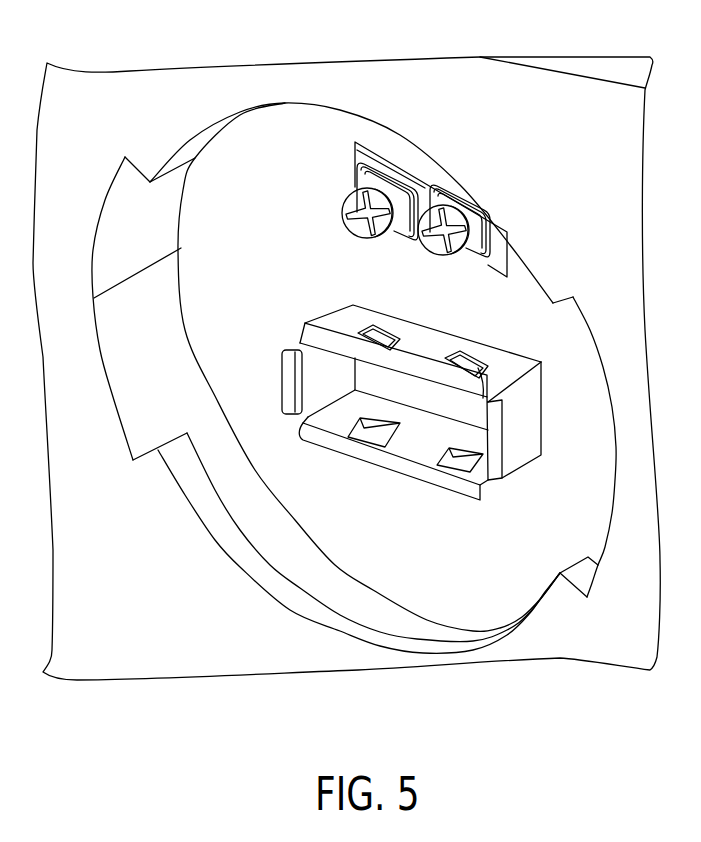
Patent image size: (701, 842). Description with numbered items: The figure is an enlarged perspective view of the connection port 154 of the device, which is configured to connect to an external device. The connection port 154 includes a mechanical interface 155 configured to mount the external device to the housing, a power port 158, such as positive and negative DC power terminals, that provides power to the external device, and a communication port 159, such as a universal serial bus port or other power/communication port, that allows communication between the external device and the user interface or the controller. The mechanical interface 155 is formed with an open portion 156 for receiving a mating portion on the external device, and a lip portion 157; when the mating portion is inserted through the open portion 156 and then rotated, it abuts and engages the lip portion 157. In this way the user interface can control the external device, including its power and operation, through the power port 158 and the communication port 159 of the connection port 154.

The connection port 154 is at (312, 95).
The mechanical interface 155 is at (92, 273).
The open portion 156 is at (130, 402).
The lip portion 157 is at (269, 577).
The power port 158 is at (428, 177).
The communication port 159 is at (504, 410).